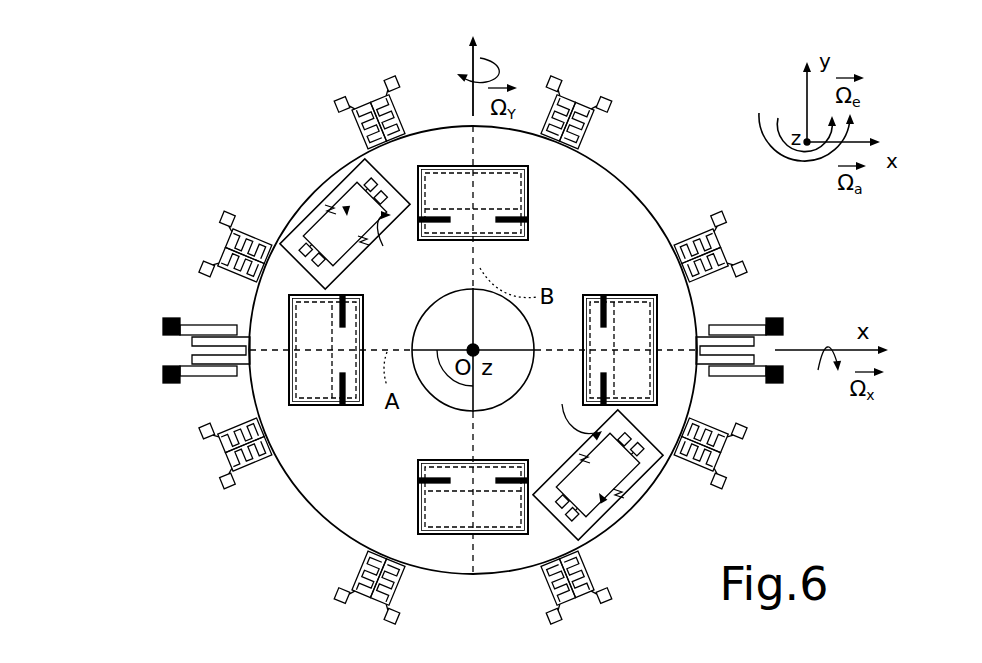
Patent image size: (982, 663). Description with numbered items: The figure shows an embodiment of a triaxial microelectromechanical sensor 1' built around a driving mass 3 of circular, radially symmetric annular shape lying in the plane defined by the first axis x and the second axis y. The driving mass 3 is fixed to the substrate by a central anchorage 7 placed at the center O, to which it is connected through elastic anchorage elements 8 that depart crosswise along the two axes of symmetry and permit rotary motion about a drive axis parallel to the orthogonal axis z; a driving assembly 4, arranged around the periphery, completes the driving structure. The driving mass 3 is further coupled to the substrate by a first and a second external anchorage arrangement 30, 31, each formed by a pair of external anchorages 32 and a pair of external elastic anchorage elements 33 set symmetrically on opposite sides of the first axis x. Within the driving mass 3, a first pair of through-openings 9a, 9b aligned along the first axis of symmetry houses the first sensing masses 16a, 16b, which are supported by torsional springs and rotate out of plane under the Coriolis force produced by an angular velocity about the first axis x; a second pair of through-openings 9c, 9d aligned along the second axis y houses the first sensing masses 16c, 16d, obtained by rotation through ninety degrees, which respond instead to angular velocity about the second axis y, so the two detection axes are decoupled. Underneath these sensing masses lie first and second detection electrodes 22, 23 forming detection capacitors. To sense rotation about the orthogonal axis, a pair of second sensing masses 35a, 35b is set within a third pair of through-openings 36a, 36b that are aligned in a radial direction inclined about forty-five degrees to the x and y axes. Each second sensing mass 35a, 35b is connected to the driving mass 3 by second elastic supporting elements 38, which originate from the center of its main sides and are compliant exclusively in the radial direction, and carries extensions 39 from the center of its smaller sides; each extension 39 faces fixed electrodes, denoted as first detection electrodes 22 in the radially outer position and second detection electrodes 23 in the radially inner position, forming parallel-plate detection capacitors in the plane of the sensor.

The microelectromechanical sensor 1' is at (698, 84).
The driving mass 3 is at (655, 213).
The driving assembly 4 is at (318, 588).
The central anchorage 7 is at (480, 350).
The elastic anchorage elements 8 is at (453, 370).
The through-opening 9a is at (333, 401).
The through-opening 9b is at (633, 398).
The through-opening 9c is at (517, 188).
The through-opening 9d is at (486, 527).
The first sensing mass 16a is at (360, 337).
The first sensing mass 16b is at (640, 318).
The first sensing mass 16c is at (499, 241).
The first sensing mass 16d is at (457, 467).
The first detection electrode 22 is at (346, 207).
The second detection electrode 23 is at (392, 207).
The first external anchorage arrangement 30 is at (156, 306).
The second external anchorage arrangement 31 is at (786, 297).
The external anchorage 32 is at (163, 327).
The external elastic anchorage element 33 is at (206, 325).
The second sensing mass 35a is at (352, 200).
The second sensing mass 35b is at (606, 494).
The through-opening 36a is at (396, 241).
The through-opening 36b is at (573, 410).
The second elastic supporting elements 38 is at (326, 207).
The extensions 39 is at (391, 171).